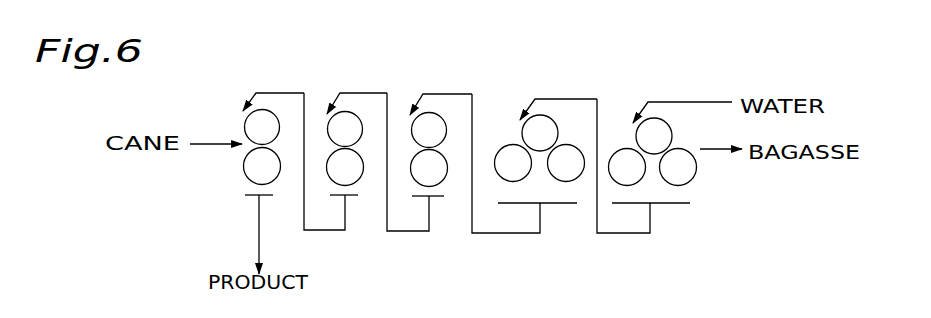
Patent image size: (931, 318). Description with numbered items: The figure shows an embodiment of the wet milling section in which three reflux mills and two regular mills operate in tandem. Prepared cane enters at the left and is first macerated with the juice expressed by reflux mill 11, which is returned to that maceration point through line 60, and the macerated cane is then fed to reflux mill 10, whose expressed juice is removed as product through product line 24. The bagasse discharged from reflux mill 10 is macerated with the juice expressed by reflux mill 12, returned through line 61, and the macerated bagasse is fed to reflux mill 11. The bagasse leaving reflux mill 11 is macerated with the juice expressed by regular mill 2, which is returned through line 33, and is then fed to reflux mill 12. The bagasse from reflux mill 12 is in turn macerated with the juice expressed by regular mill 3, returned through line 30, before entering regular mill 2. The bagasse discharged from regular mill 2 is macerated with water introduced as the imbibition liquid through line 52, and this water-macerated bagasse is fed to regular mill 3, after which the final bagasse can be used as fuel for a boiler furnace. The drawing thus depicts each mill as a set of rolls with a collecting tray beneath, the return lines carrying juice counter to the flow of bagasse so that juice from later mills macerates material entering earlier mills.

The reflux mill 10 is at (270, 137).
The reflux mill 11 is at (353, 139).
The reflux mill 12 is at (437, 140).
The regular mill 2 is at (547, 143).
The regular mill 3 is at (661, 146).
The product line 24 is at (259, 218).
The water line 52 is at (694, 102).
The reflux juice return line 60 is at (345, 230).
The reflux juice return line 61 is at (429, 231).
The regular mill juice return line 33 is at (540, 233).
The regular mill juice return line 30 is at (650, 233).